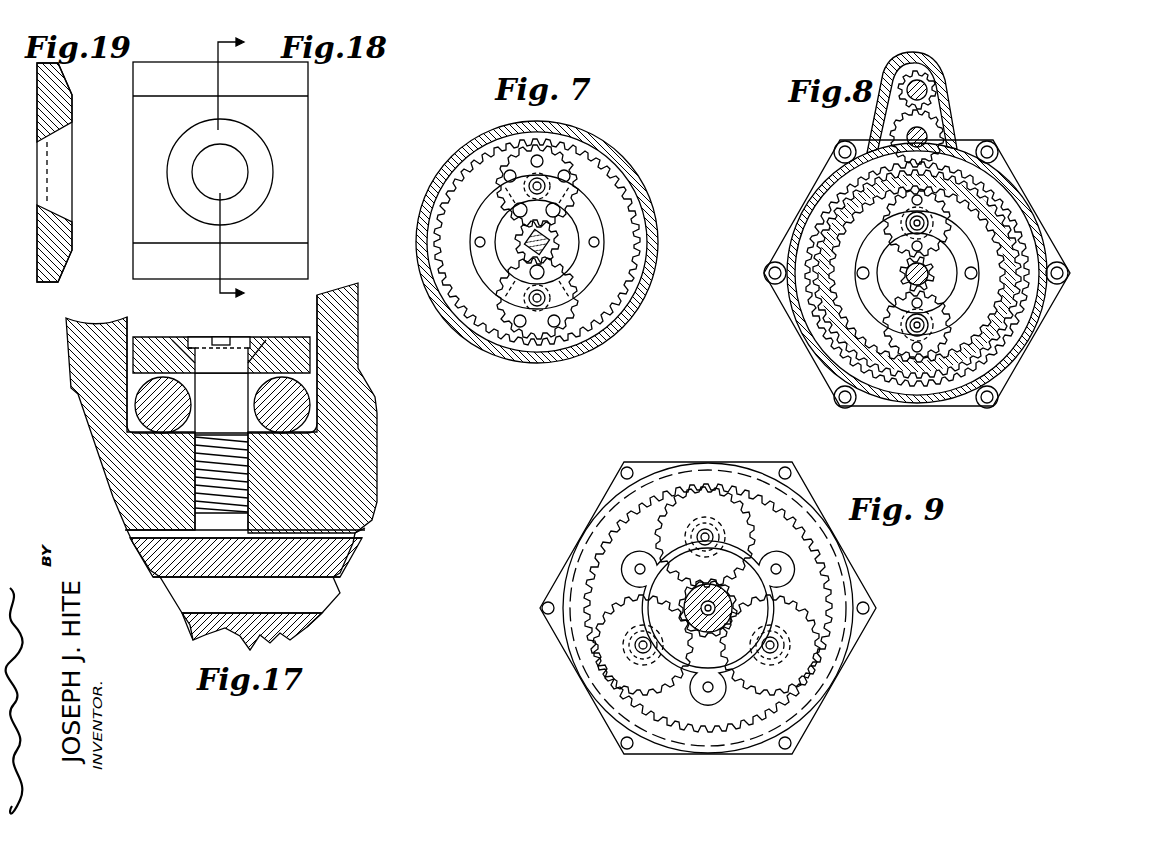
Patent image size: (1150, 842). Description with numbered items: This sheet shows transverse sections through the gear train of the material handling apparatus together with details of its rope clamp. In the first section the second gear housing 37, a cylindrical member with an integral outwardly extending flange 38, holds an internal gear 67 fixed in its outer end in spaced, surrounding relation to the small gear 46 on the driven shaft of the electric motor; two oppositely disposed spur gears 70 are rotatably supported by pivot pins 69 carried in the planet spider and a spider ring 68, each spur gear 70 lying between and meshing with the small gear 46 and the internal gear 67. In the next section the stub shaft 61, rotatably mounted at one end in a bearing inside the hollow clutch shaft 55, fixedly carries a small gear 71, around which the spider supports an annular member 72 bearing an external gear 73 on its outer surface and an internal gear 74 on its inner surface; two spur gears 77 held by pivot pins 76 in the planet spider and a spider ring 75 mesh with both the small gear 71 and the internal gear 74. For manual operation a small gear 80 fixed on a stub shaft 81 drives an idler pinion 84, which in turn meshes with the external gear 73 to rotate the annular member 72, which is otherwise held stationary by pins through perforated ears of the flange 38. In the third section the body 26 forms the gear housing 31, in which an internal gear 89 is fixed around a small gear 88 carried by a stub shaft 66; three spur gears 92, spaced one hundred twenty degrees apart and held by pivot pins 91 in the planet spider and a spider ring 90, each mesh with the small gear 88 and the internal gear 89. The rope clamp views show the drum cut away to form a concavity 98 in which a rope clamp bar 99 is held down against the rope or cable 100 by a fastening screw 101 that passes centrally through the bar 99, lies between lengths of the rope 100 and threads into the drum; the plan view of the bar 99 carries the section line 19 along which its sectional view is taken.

In FIG. 19, the rope clamp bar 99 is at (58, 227).
In FIG. 18, the rope clamp bar 99 is at (283, 210).
In FIG. 17, the rope clamp bar 99 is at (288, 350).
In FIG. 18, the section line 19 is at (210, 171).
In FIG. 17, the rope or cable 100 is at (145, 410).
In FIG. 17, the fastening screw 101 is at (221, 451).
In FIG. 17, the concavity 98 is at (308, 380).
In FIG. 7, the internal gear 67 is at (478, 158).
In FIG. 7, the pivot pins 69 is at (540, 184).
In FIG. 7, the second gear housing 37 is at (593, 147).
In FIG. 7, the spur gears 70 is at (582, 177).
In FIG. 7, the spider ring 68 is at (592, 223).
In FIG. 7, the small gear 46 is at (547, 250).
In FIG. 8, the stub shaft 81 is at (903, 80).
In FIG. 8, the small gear 80 is at (943, 68).
In FIG. 8, the flange 38 is at (953, 105).
In FIG. 8, the idler pinion 84 is at (943, 126).
In FIG. 8, the spur gears 77 is at (905, 215).
In FIG. 8, the pivot pins 76 is at (927, 220).
In FIG. 8, the small gear 71 is at (910, 268).
In FIG. 8, the stub shaft 61 is at (928, 260).
In FIG. 8, the external gear 73 is at (1030, 257).
In FIG. 8, the annular member 72 is at (1008, 312).
In FIG. 8, the spider ring 75 is at (865, 293).
In FIG. 8, the internal gear 74 is at (988, 330).
In FIG. 9, the pivot pins 91 is at (704, 534).
In FIG. 9, the internal gear 89 is at (708, 482).
In FIG. 9, the spur gears 92 is at (660, 527).
In FIG. 9, the small gear 88 is at (677, 592).
In FIG. 9, the hollow clutch shaft 55 is at (733, 600).
In FIG. 9, the body 26 is at (855, 593).
In FIG. 9, the gear housing 31 is at (562, 640).
In FIG. 9, the spider ring 90 is at (723, 683).
In FIG. 9, the stub shaft 66 is at (685, 620).